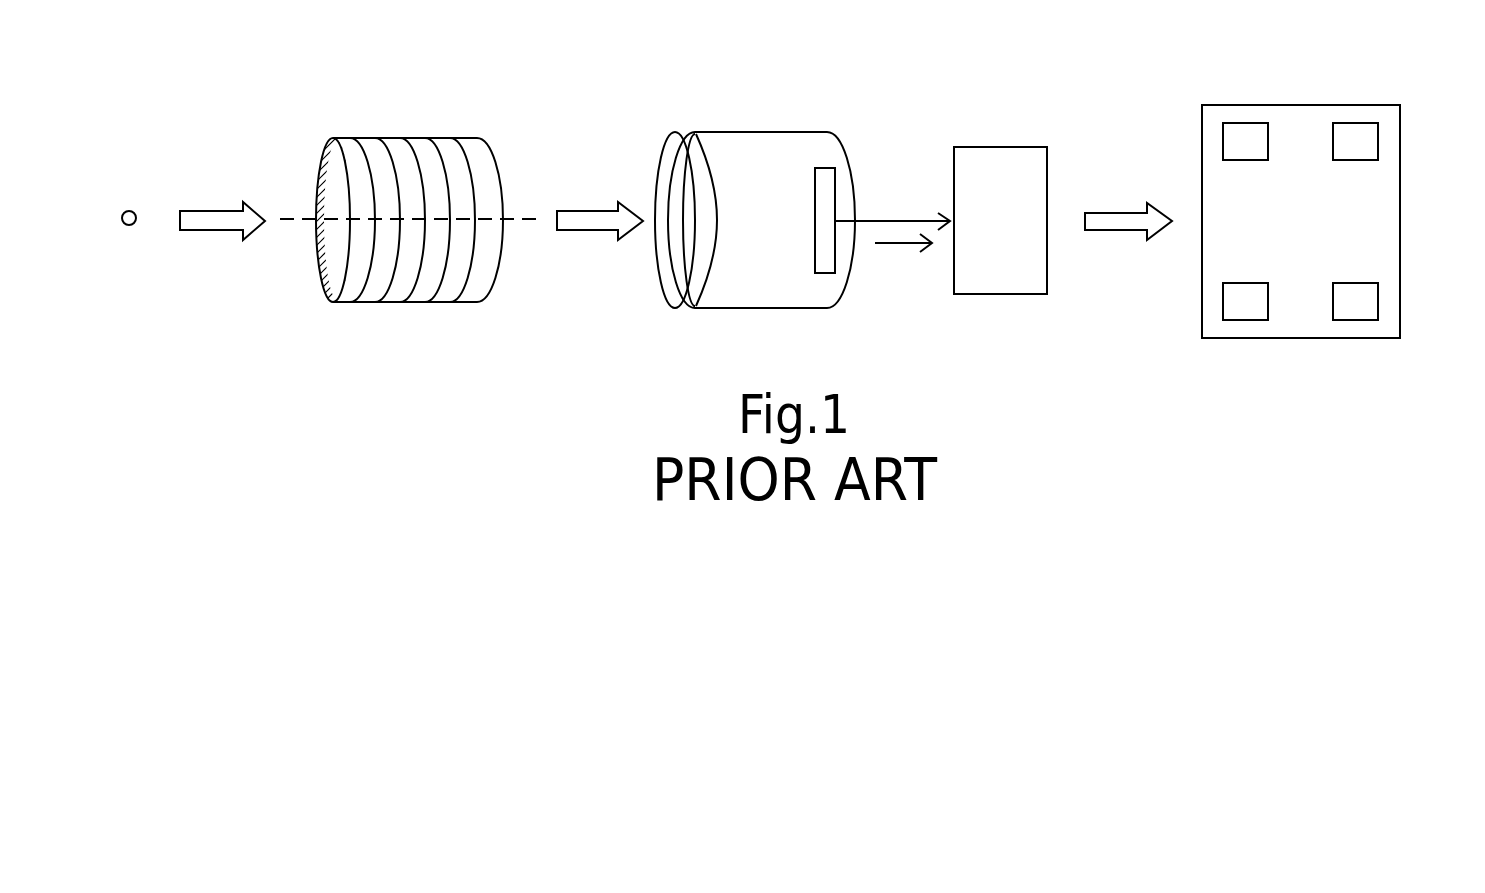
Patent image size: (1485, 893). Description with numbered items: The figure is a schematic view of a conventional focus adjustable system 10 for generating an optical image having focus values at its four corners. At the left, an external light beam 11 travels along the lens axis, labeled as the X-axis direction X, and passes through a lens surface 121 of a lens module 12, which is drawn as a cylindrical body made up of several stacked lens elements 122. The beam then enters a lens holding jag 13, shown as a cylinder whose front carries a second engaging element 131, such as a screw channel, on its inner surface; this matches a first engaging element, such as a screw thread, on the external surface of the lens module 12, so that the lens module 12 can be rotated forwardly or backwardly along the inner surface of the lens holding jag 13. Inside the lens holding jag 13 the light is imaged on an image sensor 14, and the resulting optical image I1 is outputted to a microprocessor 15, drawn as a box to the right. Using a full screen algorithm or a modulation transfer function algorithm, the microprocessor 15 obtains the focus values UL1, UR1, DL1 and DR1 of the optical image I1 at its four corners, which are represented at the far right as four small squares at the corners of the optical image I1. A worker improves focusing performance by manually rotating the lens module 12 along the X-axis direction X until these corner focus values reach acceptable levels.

The focus adjustable system 10 is at (714, 19).
The external light beam 11 is at (134, 211).
The lens module 12 is at (423, 217).
The lens surface 121 is at (338, 277).
The lens elements 122 is at (470, 177).
The lens holding jag 13 is at (740, 199).
The second engaging element 131 is at (672, 168).
The image sensor 14 is at (822, 180).
The microprocessor 15 is at (985, 160).
The X-axis direction X is at (540, 221).
The optical image I1 is at (900, 243).
The upper-left corner focus value UL1 is at (1247, 133).
The upper-right corner focus value UR1 is at (1353, 137).
The lower-left corner focus value DL1 is at (1237, 295).
The lower-right corner focus value DR1 is at (1358, 295).